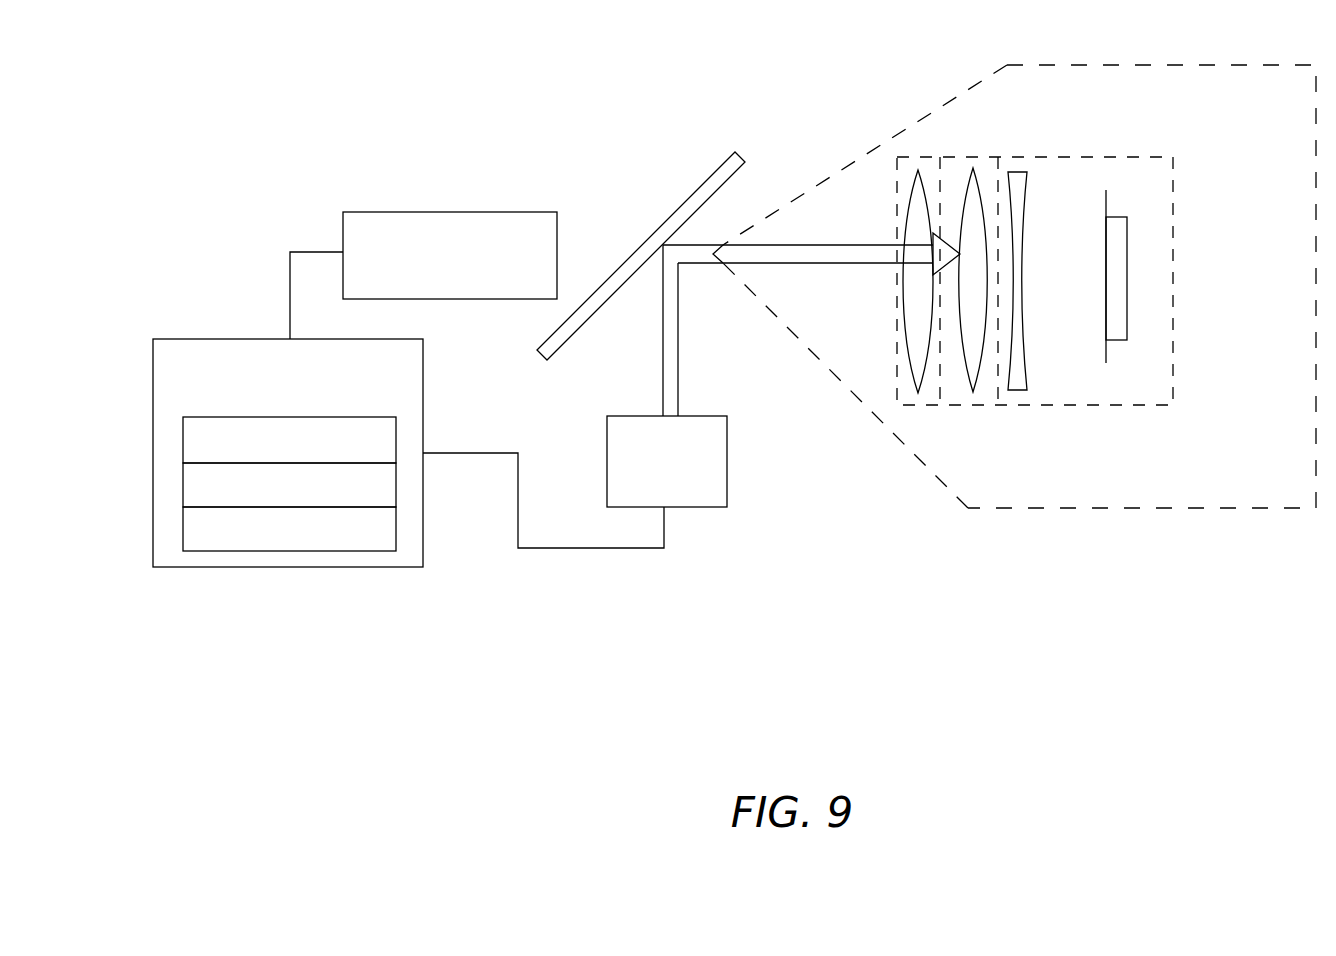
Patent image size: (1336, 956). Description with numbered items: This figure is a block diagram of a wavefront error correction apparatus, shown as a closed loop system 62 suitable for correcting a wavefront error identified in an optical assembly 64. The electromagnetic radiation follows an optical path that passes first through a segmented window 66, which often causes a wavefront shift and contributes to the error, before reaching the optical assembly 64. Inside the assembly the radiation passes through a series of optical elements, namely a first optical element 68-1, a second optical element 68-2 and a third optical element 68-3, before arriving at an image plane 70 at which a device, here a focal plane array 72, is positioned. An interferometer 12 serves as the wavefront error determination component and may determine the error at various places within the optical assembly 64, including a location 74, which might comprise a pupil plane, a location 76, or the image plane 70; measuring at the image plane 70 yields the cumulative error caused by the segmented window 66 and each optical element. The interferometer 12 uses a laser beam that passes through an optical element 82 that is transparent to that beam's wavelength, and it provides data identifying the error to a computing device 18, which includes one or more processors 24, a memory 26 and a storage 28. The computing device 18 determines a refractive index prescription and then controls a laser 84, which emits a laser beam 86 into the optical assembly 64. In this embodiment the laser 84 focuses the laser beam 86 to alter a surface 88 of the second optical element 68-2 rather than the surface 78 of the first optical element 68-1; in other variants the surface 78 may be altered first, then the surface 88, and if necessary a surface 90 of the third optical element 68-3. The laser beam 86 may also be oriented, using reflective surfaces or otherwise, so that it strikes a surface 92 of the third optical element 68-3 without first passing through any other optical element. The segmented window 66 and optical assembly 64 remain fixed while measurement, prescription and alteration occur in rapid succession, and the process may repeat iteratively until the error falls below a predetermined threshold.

The interferometer 12 is at (343, 222).
The computing device 18 is at (423, 373).
The processor 24 is at (396, 437).
The memory 26 is at (396, 490).
The storage 28 is at (396, 533).
The closed loop system 62 is at (585, 93).
The optical assembly 64 is at (1173, 160).
The segmented window 66 is at (798, 193).
The optical element 68-1 is at (918, 170).
The optical element 68-2 is at (968, 178).
The optical element 68-3 is at (1017, 390).
The image plane 70 is at (1106, 363).
The focal plane array 72 is at (1127, 297).
The location 74 is at (940, 197).
The location 76 is at (998, 368).
The surface 78 is at (900, 313).
The optical element 82 is at (736, 150).
The laser 84 is at (727, 447).
The laser beam 86 is at (678, 340).
The surface 88 is at (958, 368).
The surface 90 is at (1003, 182).
The surface 92 is at (1032, 367).